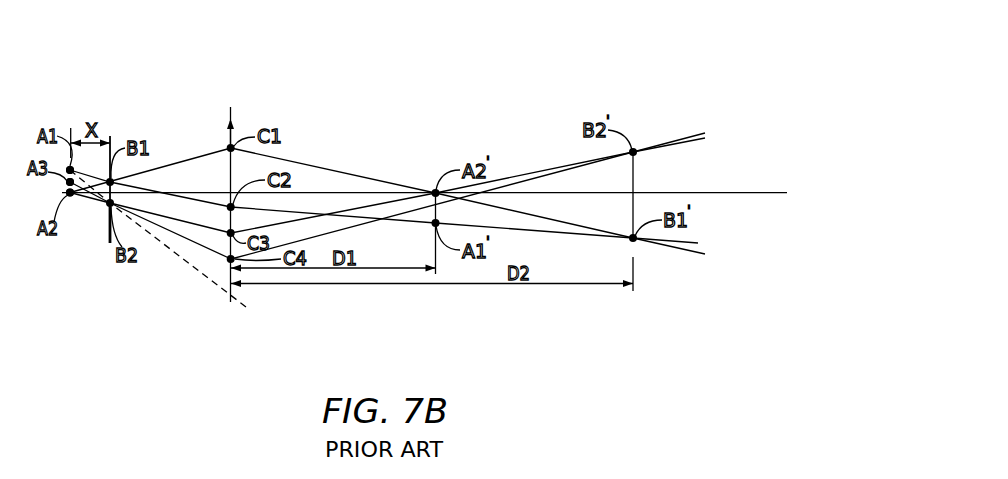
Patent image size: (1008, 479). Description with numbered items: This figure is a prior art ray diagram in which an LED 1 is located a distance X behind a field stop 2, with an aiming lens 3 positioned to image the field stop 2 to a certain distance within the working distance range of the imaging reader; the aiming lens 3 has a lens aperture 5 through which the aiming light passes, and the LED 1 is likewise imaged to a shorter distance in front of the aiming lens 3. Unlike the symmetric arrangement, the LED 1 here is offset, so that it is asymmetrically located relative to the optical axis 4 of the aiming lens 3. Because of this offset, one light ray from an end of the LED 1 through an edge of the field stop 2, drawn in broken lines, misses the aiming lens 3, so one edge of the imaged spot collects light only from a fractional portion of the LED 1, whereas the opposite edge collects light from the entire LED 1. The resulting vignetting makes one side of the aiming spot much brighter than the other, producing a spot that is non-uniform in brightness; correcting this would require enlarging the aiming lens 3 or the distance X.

The LED 1 is at (70, 203).
The field stop 2 is at (106, 245).
The aiming lens 3 is at (226, 224).
The optical axis 4 is at (732, 221).
The lens aperture 5 is at (228, 118).